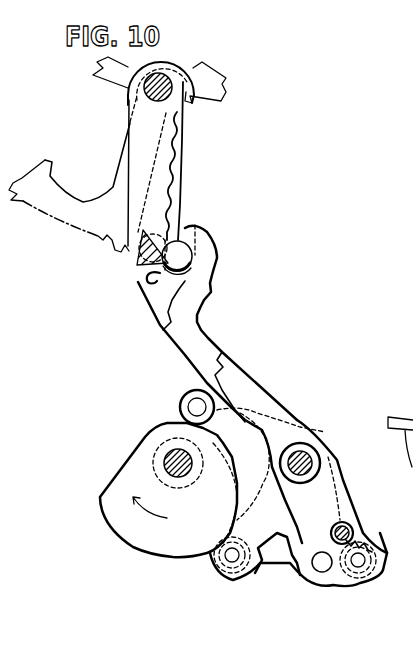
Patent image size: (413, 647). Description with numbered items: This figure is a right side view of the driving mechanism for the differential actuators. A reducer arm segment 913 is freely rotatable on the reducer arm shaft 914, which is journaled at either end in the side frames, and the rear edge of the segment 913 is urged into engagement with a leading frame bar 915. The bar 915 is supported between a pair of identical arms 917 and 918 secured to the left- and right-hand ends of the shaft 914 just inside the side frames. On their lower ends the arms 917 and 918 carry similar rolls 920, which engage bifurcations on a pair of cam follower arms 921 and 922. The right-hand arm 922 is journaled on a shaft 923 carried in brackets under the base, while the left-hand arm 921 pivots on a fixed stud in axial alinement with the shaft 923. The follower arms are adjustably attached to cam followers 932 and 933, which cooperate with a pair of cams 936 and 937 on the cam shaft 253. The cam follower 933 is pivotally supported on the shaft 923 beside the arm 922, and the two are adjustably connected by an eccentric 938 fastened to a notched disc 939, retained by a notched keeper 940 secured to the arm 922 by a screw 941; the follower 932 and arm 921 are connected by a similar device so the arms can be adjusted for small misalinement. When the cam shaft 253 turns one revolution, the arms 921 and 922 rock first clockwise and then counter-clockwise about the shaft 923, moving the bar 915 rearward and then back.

The cam shaft 253 is at (162, 455).
The reducer arm segment 913 is at (114, 188).
The reducer arm shaft 914 is at (173, 90).
The leading frame bar 915 is at (150, 270).
The arm 917 is at (182, 141).
The arm 918 is at (178, 184).
The roll 920 is at (181, 238).
The cam follower arm 921 is at (198, 320).
The cam follower arm 922 is at (147, 301).
The shaft 923 is at (311, 461).
The cam follower 932 is at (271, 560).
The cam follower 933 is at (272, 500).
The cam 936 is at (247, 518).
The cam 937 is at (138, 540).
The eccentric 938 is at (363, 535).
The notched disc 939 is at (363, 573).
The notched keeper 940 is at (345, 529).
The screw 941 is at (340, 500).